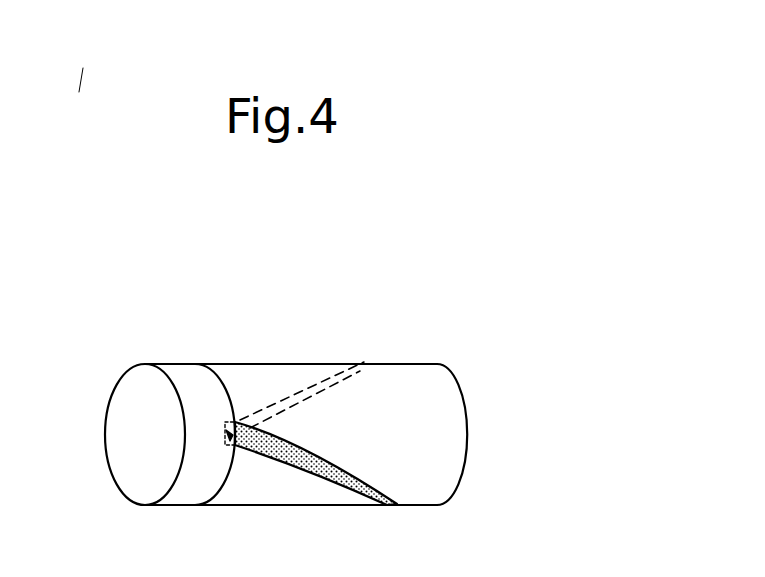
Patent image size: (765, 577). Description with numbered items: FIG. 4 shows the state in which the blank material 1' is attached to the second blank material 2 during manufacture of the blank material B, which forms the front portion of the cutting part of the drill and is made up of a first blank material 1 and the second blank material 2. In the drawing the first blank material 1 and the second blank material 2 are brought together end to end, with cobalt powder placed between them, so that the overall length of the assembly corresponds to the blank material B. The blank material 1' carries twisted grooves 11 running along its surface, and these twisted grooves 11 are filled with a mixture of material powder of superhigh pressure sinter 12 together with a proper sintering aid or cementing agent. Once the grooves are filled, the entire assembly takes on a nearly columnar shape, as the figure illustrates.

The blank material 1' is at (340, 434).
The first blank material 1 is at (324, 303).
The second blank material 2 is at (200, 334).
The blank material B is at (348, 278).
The twisted grooves 11 is at (310, 381).
The material powder of superhigh pressure sinter 12 is at (308, 458).